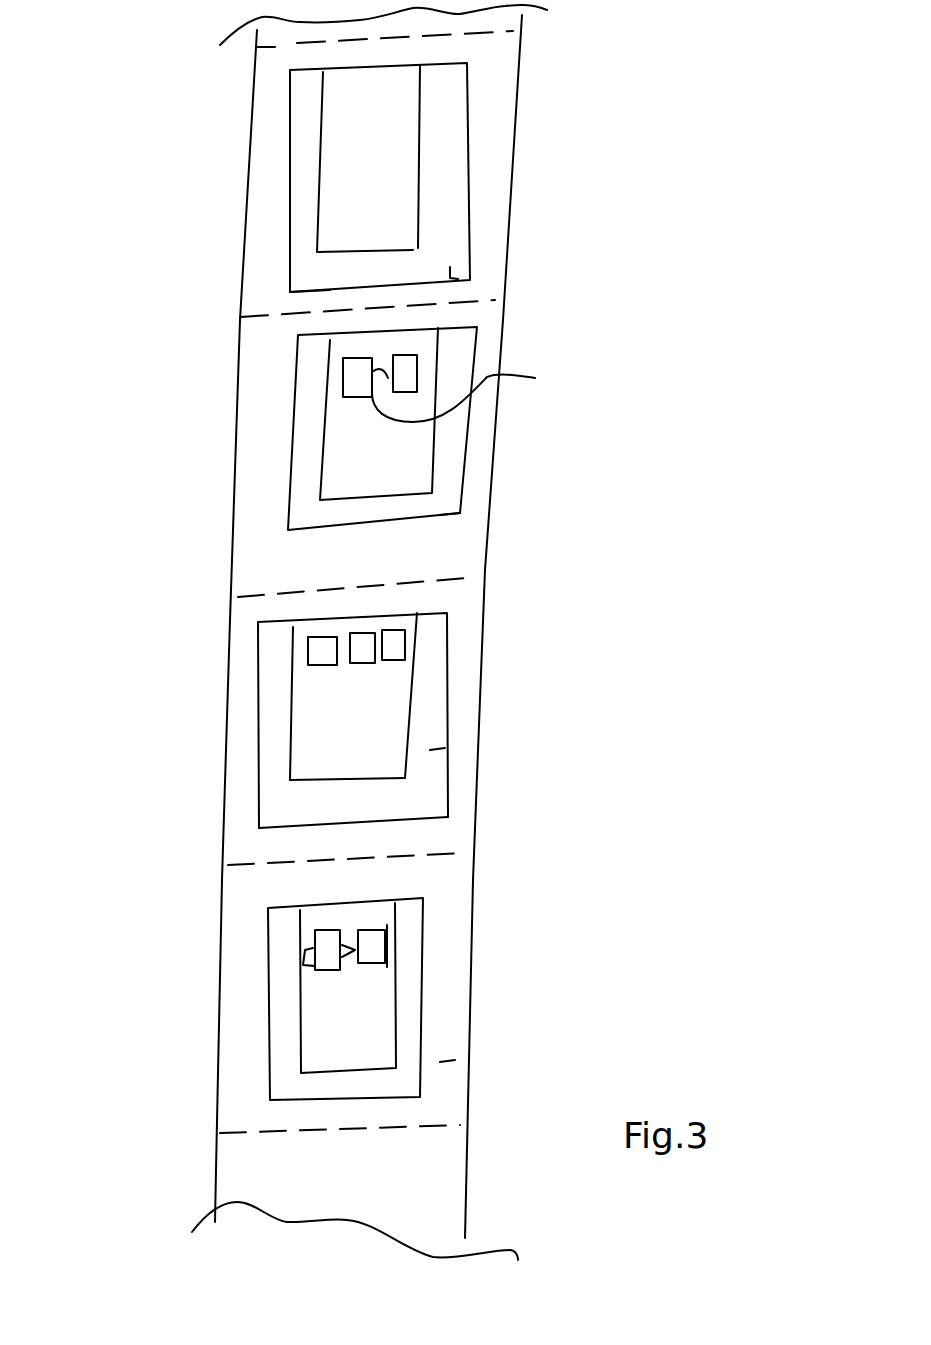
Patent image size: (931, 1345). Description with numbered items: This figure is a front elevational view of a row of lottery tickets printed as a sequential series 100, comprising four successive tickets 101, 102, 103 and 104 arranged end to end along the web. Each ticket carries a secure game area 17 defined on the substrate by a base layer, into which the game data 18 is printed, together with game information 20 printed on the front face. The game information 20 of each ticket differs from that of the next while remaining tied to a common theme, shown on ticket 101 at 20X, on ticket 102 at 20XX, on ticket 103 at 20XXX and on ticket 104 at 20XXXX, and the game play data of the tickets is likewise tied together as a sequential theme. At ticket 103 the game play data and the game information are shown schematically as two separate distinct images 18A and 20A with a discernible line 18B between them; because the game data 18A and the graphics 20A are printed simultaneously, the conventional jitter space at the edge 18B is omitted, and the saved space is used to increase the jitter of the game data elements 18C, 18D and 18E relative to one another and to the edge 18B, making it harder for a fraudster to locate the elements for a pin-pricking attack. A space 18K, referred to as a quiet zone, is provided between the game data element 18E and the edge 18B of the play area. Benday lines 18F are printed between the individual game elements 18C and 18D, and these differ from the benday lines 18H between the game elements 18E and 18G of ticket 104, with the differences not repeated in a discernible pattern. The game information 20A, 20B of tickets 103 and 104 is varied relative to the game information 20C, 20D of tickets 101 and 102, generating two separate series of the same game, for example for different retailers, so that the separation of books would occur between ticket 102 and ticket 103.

The series of tickets 100 is at (560, 673).
The ticket 101 is at (512, 230).
The ticket 102 is at (500, 470).
The ticket 103 is at (477, 783).
The ticket 104 is at (467, 1008).
The game area 17 is at (420, 193).
The game data 18 is at (353, 150).
The image forming the game play data 18A is at (320, 692).
The discernible line 18B is at (418, 642).
The game data element 18C is at (343, 362).
The game data element 18D is at (407, 368).
The game data element 18E is at (397, 642).
The benday lines 18F is at (353, 967).
The game element 18G is at (380, 940).
The benday lines 18H is at (485, 392).
The space 18K is at (305, 967).
The game information 20 is at (450, 155).
The image forming the game information 20A is at (265, 757).
The game information 20B is at (298, 1086).
The game information 20C is at (297, 498).
The game information 20D is at (313, 273).
The game information 20X is at (450, 277).
The game information 20XX is at (460, 490).
The game information 20XXX is at (433, 745).
The game information 20XXXX is at (463, 1050).